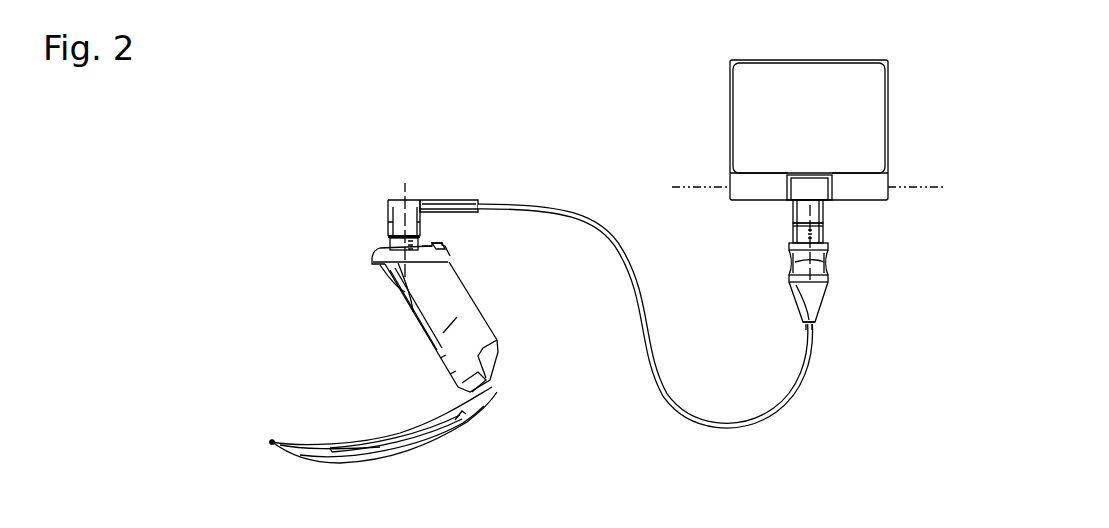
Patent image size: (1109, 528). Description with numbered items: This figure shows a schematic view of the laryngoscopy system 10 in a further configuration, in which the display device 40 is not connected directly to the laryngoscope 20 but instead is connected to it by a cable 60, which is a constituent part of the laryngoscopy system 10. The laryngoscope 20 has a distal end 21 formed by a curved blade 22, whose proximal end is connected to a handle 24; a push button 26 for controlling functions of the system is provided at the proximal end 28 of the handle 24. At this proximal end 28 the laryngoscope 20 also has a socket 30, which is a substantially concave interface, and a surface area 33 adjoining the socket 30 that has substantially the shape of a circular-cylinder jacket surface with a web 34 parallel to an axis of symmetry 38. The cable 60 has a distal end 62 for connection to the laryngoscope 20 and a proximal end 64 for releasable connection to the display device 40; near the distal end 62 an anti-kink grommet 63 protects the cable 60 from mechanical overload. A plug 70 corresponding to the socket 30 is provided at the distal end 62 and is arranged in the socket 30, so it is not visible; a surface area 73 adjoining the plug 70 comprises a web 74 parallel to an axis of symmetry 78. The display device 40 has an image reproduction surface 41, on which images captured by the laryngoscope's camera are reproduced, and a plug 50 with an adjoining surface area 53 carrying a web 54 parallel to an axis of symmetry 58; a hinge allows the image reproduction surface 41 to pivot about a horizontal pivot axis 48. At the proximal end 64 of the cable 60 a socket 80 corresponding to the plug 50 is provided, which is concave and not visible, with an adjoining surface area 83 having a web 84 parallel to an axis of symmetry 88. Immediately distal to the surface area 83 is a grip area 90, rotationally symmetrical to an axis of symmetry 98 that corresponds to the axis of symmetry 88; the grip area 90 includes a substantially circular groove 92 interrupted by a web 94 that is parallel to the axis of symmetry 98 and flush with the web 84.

The laryngoscopy system 10 is at (339, 88).
The laryngoscope 20 is at (488, 397).
The distal end 21 is at (270, 443).
The curved blade 22 is at (330, 448).
The handle 24 is at (420, 312).
The push button 26 is at (437, 252).
The proximal end 28 is at (370, 257).
The socket 30 is at (430, 243).
The surface area 33 is at (380, 245).
The web 34 is at (388, 237).
The axis of symmetry 38 is at (403, 270).
The display device 40 is at (730, 86).
The image reproduction surface 41 is at (880, 82).
The horizontal pivot axis 48 is at (717, 187).
The plug 50 is at (822, 236).
The surface area 53 is at (826, 210).
The web 54 is at (800, 210).
The axis of symmetry 58 is at (807, 213).
The cable 60 is at (670, 405).
The distal end 62 is at (432, 201).
The anti-kink grommet 63 is at (465, 200).
The proximal end 64 is at (824, 262).
The plug 70 is at (421, 236).
The surface area 73 is at (388, 210).
The web 74 is at (388, 220).
The axis of symmetry 78 is at (388, 230).
The socket 80 is at (826, 240).
The surface area 83 is at (826, 244).
The web 84 is at (806, 232).
The axis of symmetry 88 is at (827, 249).
The grip area 90 is at (828, 253).
The circular groove 92 is at (830, 259).
The web 94 is at (808, 258).
The axis of symmetry 98 is at (805, 268).